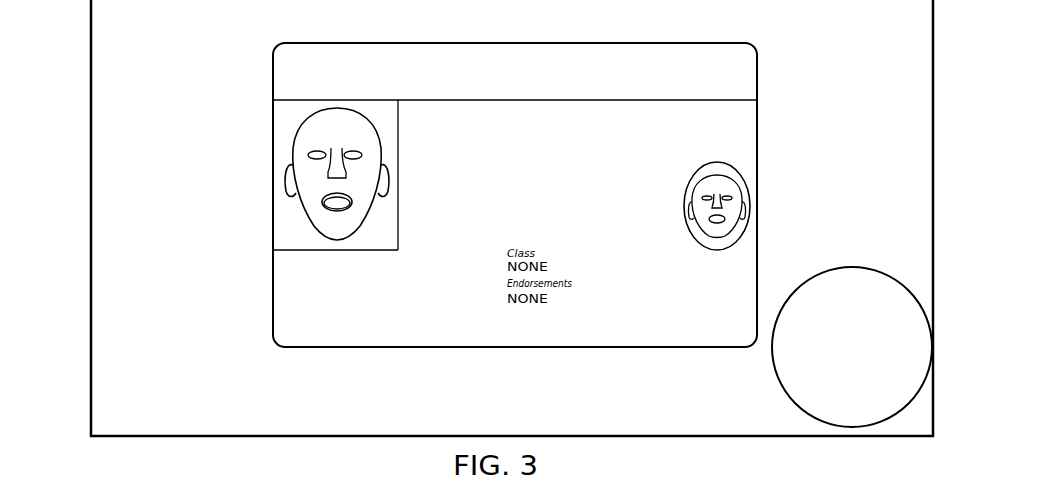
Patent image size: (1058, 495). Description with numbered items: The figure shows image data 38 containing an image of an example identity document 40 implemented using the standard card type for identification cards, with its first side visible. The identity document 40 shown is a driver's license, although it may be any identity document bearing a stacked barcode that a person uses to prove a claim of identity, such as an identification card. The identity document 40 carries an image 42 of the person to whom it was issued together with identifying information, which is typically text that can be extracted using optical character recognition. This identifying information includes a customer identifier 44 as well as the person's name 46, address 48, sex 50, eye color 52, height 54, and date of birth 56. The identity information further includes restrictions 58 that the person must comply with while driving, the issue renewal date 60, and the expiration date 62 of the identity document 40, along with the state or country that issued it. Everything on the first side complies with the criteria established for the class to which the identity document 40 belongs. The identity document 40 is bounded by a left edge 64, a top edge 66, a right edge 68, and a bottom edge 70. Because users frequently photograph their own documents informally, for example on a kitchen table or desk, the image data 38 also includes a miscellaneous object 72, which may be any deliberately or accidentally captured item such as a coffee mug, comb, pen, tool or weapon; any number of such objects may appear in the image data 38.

The image data 38 is at (62, 28).
The identity document 40 is at (273, 58).
The image of the person 42 is at (297, 212).
The customer identifier 44 is at (510, 112).
The name 46 is at (505, 155).
The address 48 is at (460, 195).
The sex 50 is at (432, 254).
The eye color 52 is at (435, 284).
The height 54 is at (405, 313).
The date of birth 56 is at (635, 243).
The restrictions 58 is at (535, 322).
The issue renewal date 60 is at (655, 282).
The expiration date 62 is at (637, 314).
The left edge 64 is at (273, 162).
The top edge 66 is at (497, 43).
The right edge 68 is at (757, 144).
The bottom edge 70 is at (512, 347).
The miscellaneous object 72 is at (852, 267).